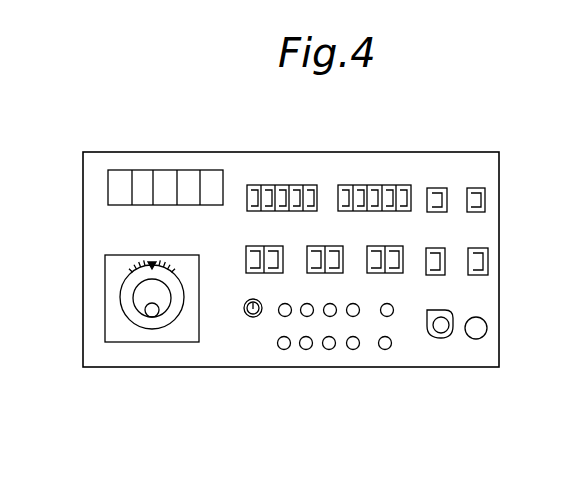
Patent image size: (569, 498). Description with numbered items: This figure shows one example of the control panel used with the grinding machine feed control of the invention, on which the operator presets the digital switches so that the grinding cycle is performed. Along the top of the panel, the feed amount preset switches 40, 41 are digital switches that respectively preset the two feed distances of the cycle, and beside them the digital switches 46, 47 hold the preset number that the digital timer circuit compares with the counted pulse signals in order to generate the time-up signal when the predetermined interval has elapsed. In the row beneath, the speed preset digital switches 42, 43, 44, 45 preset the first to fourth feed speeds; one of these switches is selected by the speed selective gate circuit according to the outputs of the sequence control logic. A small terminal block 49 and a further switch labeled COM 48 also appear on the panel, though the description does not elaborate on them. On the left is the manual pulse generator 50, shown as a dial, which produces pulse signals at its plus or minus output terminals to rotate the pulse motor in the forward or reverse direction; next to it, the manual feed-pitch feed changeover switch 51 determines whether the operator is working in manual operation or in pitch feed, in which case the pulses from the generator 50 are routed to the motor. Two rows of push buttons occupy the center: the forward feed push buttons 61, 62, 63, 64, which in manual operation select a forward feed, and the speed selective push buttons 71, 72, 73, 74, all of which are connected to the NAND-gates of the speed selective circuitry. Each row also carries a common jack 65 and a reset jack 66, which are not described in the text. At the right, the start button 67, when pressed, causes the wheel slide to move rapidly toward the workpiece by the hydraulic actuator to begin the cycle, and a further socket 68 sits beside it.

The feed amount preset switch 40 is at (316, 186).
The feed amount preset switch 41 is at (408, 186).
The speed preset digital switch 42 is at (282, 247).
The speed preset digital switch 43 is at (342, 247).
The speed preset digital switch 44 is at (400, 247).
The speed preset digital switch 45 is at (446, 249).
The digital switch 46 is at (450, 188).
The digital switch 47 is at (486, 190).
The common switch 48 is at (488, 256).
The terminal block 49 is at (145, 170).
The manual pulse generator 50 is at (176, 255).
The manual feed-pitch feed changeover switch 51 is at (246, 313).
The forward feed push button 61 is at (291, 304).
The forward feed push button 62 is at (313, 304).
The forward feed push button 63 is at (336, 304).
The forward feed push button 64 is at (359, 304).
The common jack 65 is at (393, 309).
The reset jack 66 is at (386, 349).
The start button 67 is at (450, 312).
The socket 68 is at (487, 326).
The speed selective push button 71 is at (282, 349).
The speed selective push button 72 is at (305, 349).
The speed selective push button 73 is at (328, 349).
The speed selective push button 74 is at (353, 349).